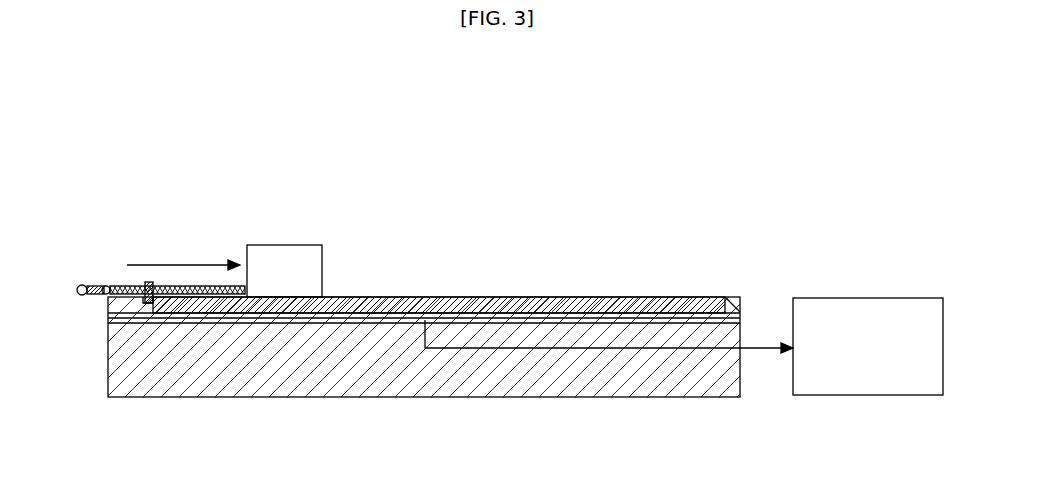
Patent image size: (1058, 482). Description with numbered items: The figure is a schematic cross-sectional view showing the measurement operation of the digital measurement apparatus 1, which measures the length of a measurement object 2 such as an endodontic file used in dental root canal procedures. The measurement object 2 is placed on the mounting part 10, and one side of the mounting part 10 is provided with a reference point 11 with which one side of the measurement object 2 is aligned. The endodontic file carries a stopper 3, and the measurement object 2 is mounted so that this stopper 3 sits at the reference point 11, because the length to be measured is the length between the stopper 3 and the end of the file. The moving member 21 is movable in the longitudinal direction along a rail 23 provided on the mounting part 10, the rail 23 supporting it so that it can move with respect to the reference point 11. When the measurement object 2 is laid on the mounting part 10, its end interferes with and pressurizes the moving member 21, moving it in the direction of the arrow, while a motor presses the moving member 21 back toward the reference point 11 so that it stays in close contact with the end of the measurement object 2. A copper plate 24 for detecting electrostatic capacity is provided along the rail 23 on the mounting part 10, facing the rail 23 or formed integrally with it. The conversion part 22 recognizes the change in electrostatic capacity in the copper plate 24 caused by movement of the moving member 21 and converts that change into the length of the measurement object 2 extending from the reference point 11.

The digital measurement apparatus 1 is at (534, 157).
The measurement object 2 is at (148, 303).
The stopper 3 is at (145, 284).
The mounting part 10 is at (125, 370).
The reference point 11 is at (143, 304).
The moving member 21 is at (283, 243).
The conversion part 22 is at (867, 296).
The rail 23 is at (521, 305).
The copper plate 24 is at (218, 323).